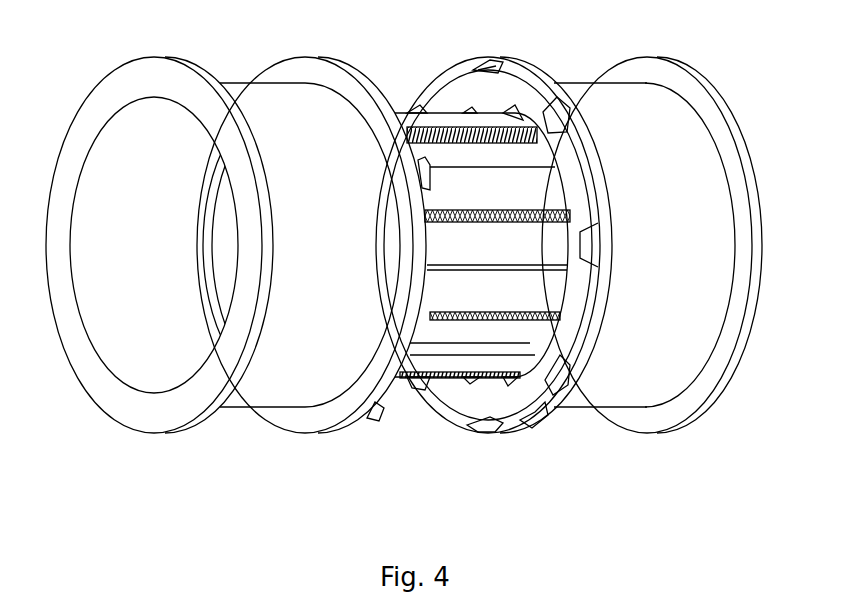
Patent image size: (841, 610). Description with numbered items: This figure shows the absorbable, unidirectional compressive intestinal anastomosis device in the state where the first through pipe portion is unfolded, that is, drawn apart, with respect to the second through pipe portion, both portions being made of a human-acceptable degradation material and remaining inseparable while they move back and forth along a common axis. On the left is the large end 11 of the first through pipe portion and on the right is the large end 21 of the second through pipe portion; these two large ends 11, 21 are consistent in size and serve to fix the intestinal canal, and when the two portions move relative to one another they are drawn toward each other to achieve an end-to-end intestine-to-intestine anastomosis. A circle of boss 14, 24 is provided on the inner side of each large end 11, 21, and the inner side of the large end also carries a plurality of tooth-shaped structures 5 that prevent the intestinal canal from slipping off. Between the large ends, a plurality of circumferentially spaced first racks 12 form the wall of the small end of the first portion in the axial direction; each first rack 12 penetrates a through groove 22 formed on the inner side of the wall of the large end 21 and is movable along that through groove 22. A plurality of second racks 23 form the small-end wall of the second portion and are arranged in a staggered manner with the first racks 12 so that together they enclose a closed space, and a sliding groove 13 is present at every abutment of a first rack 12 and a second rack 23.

The tooth-shaped structures 5 is at (490, 58).
The large end of the first through pipe portion 11 is at (257, 93).
The first racks 12 is at (497, 145).
The sliding groove 13 is at (430, 216).
The boss 14 is at (360, 418).
The large end of the second through pipe portion 21 is at (692, 148).
The through grooves 22 is at (572, 279).
The second racks 23 is at (553, 245).
The boss 24 is at (533, 422).